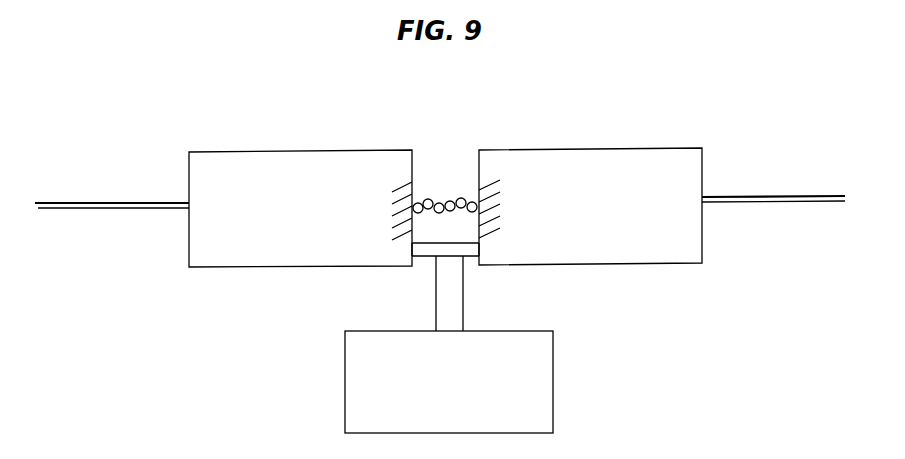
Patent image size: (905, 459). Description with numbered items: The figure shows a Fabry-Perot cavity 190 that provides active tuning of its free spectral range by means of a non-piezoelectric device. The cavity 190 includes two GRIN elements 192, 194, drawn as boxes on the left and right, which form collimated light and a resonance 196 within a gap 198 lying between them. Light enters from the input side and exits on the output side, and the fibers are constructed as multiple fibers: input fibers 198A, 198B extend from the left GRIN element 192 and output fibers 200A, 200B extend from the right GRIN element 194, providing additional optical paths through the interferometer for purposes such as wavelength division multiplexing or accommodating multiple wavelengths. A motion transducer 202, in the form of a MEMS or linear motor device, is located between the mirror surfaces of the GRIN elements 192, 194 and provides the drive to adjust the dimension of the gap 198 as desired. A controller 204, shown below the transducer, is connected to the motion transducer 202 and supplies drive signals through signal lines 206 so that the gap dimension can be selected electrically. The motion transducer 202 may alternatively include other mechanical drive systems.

The Fabry-Perot cavity 190 is at (610, 103).
The GRIN element 192 is at (314, 238).
The GRIN element 194 is at (607, 236).
The resonance 196 is at (439, 203).
The gap 198 is at (453, 158).
The input fiber 198A is at (133, 210).
The input fiber 198B is at (113, 201).
The output fiber 200A is at (740, 204).
The output fiber 200B is at (784, 195).
The motion transducer 202 is at (425, 252).
The controller 204 is at (432, 410).
The signal lines 206 is at (437, 313).